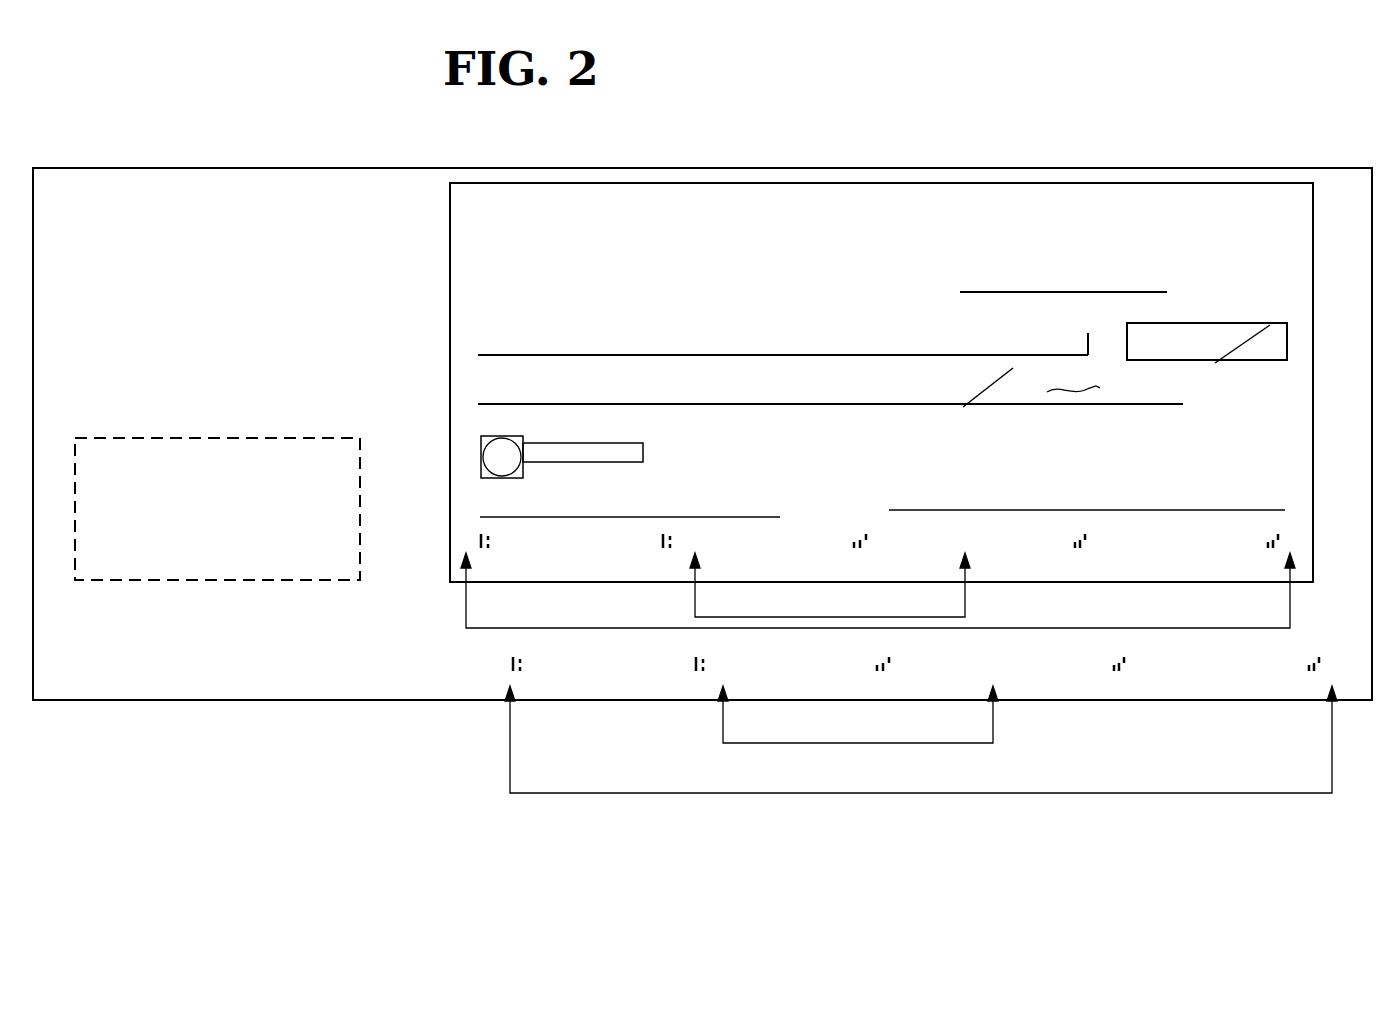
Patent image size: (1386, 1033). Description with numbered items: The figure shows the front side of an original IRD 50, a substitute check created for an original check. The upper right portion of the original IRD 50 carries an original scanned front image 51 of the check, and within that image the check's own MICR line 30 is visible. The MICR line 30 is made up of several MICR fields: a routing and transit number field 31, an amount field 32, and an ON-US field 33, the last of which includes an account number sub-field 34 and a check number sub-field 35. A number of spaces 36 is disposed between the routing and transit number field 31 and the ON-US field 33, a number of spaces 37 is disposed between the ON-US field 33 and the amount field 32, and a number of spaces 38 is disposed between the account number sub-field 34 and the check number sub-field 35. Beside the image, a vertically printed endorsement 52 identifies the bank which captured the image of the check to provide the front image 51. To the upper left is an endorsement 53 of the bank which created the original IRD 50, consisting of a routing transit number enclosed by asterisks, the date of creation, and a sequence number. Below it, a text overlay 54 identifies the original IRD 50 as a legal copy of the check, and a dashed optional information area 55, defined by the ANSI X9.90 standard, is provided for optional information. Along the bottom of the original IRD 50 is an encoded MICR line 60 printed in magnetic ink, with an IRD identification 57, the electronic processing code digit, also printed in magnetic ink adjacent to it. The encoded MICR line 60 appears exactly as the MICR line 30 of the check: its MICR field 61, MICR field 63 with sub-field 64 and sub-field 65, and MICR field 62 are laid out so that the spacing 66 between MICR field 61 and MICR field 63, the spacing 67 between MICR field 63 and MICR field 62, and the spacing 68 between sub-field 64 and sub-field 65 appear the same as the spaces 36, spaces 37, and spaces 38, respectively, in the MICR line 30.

The MICR line 30 is at (906, 578).
The routing and transit number field 31 is at (566, 552).
The amount field 32 is at (1143, 550).
The ON-US field 33 is at (861, 575).
The account number sub-field 34 is at (755, 552).
The check number sub-field 35 is at (942, 552).
The spaces 36 is at (680, 552).
The spaces 37 is at (1013, 545).
The spaces 38 is at (875, 552).
The original IRD 50 is at (1036, 98).
The original scanned front image 51 is at (770, 183).
The endorsement 52 is at (380, 517).
The endorsement 53 is at (158, 200).
The text overlay 54 is at (98, 296).
The optional information area 55 is at (208, 582).
The IRD identification 57 is at (498, 673).
The encoded MICR line 60 is at (894, 746).
The MICR field 61 is at (603, 673).
The MICR field 62 is at (1212, 673).
The MICR field 63 is at (858, 714).
The sub-field 64 is at (770, 673).
The sub-field 65 is at (957, 673).
The spacing 66 is at (712, 673).
The spacing 67 is at (1040, 662).
The spacing 68 is at (895, 673).